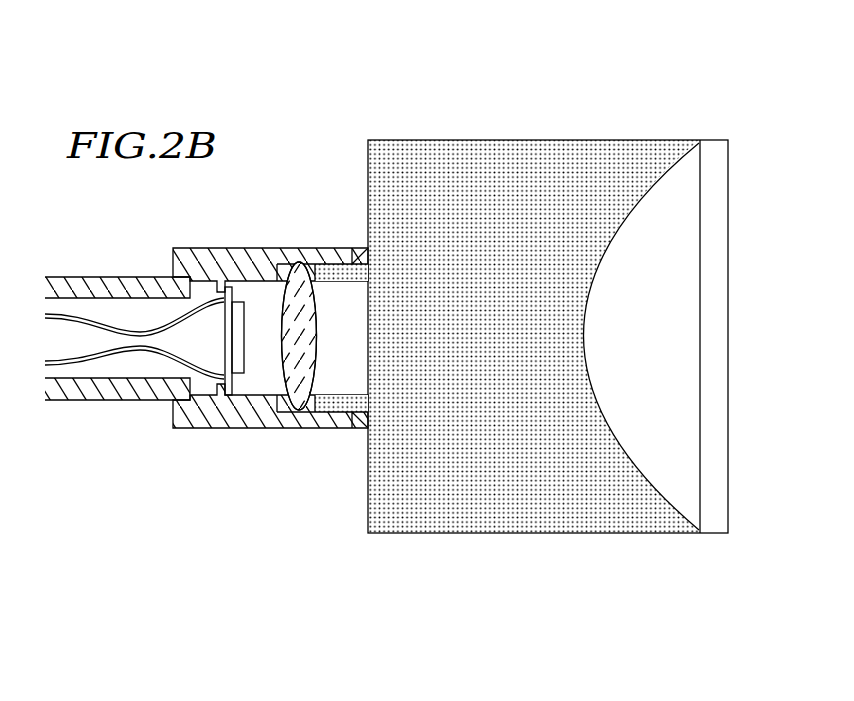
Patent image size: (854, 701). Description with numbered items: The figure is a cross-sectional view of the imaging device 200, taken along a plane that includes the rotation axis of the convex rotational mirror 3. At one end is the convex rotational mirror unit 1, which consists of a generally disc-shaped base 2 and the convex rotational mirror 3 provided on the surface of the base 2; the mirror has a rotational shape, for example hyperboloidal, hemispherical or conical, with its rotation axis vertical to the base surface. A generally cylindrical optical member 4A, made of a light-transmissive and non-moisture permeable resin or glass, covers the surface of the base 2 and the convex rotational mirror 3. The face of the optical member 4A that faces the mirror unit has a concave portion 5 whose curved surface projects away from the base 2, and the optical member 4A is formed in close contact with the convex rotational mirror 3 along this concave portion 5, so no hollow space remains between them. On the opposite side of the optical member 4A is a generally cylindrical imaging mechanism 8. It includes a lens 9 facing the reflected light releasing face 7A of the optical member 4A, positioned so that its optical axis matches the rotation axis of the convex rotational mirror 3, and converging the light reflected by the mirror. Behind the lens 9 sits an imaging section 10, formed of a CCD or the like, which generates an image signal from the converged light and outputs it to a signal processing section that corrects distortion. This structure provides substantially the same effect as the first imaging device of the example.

The imaging device 200 is at (411, 335).
The convex rotational mirror unit 1 is at (659, 361).
The base 2 is at (712, 377).
The convex rotational mirror 3 is at (662, 452).
The optical member 4A is at (560, 542).
The concave portion 5 is at (608, 228).
The reflected light releasing face 7A is at (368, 336).
The imaging mechanism 8 is at (206, 385).
The lens 9 is at (291, 370).
The imaging section 10 is at (227, 343).